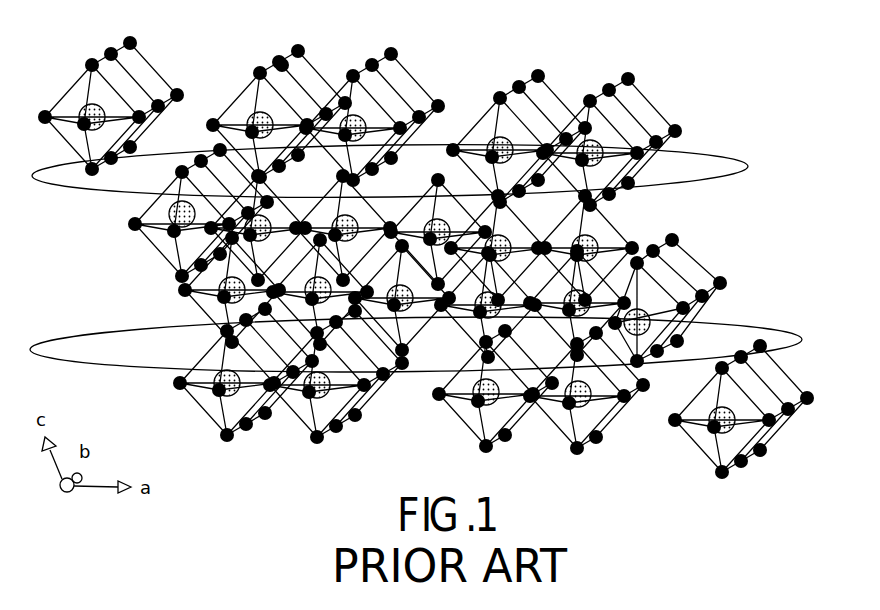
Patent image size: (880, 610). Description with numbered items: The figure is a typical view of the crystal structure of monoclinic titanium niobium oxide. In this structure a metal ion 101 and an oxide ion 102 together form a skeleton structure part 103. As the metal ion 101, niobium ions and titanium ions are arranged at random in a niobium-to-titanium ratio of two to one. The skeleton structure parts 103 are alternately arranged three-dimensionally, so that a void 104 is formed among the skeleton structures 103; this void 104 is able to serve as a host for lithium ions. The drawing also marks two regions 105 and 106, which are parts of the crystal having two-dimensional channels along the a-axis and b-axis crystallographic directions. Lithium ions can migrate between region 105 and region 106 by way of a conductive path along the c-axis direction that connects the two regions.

The metal ion 101 is at (365, 111).
The oxide ion 102 is at (286, 61).
The skeleton structure part 103 is at (471, 116).
The void 104 is at (305, 172).
The region 105 is at (724, 153).
The region 106 is at (762, 326).